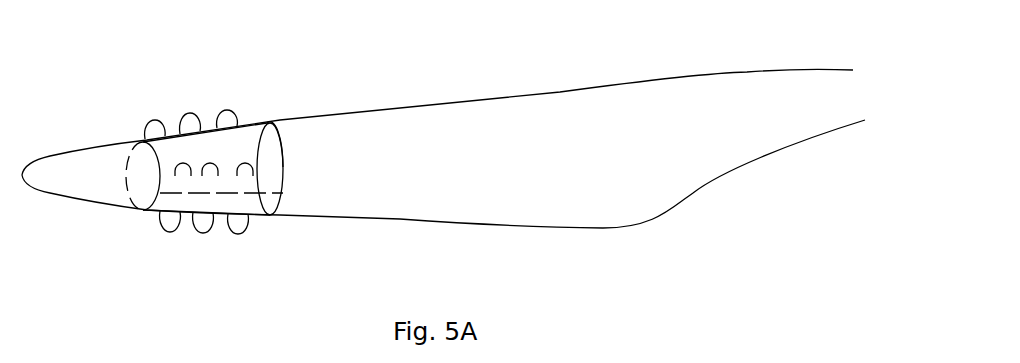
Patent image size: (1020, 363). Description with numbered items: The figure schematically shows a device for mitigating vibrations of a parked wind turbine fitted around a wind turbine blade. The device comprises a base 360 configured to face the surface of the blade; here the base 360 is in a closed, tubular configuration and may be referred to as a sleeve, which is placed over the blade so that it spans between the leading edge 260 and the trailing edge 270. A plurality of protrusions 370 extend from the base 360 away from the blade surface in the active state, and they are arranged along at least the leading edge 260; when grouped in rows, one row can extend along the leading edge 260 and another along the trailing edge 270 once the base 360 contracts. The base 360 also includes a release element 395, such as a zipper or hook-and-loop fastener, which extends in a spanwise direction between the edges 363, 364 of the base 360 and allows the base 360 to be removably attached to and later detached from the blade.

The leading edge 260 is at (423, 102).
The trailing edge 270 is at (397, 220).
The base 360 is at (247, 140).
The edge of the base 363 is at (162, 180).
The edge of the base 364 is at (282, 155).
The protrusions 370 is at (190, 112).
The release element 395 is at (253, 197).